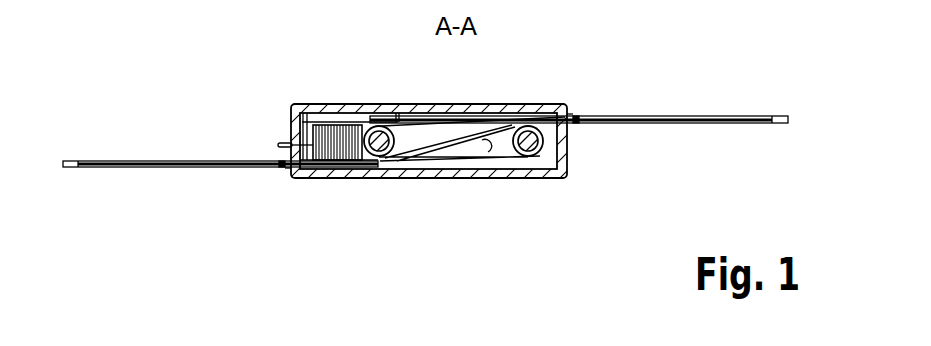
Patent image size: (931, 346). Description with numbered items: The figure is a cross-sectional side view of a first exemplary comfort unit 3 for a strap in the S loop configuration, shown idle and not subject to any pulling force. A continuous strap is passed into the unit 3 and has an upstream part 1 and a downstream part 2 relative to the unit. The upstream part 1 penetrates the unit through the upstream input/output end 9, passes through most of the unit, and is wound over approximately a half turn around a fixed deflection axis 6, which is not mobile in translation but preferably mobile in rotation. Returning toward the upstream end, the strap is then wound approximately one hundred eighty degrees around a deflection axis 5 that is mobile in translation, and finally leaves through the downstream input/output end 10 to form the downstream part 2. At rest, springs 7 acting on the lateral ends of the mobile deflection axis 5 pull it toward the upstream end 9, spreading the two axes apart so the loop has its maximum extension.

The upstream part of the strap 1 is at (136, 160).
The downstream part of the strap 2 is at (677, 116).
The comfort unit 3 is at (554, 174).
The deflection axis mobile in translation 5 is at (378, 150).
The fixed deflection axis 6 is at (524, 150).
The springs 7 is at (345, 125).
The upstream input/output end 9 is at (282, 173).
The downstream input/output end 10 is at (575, 110).